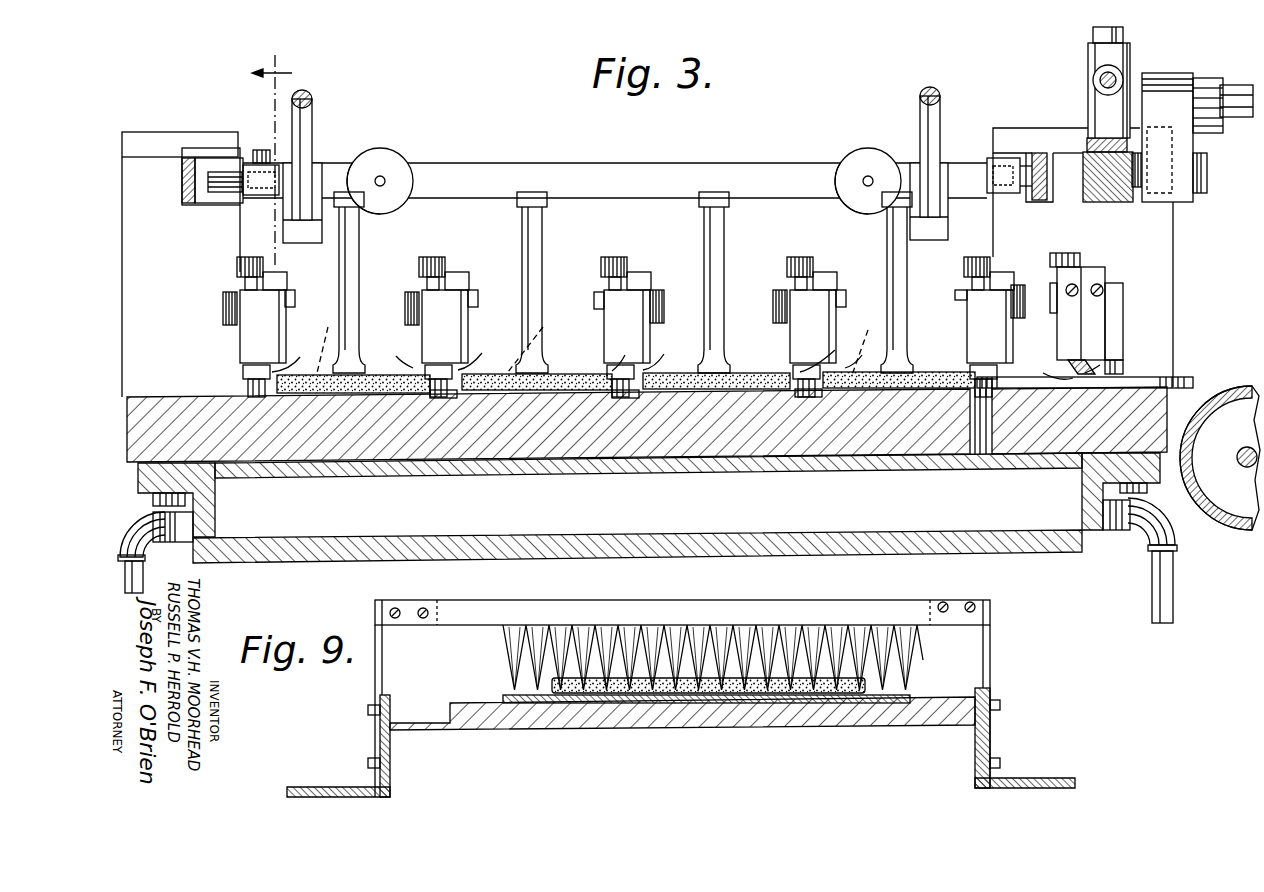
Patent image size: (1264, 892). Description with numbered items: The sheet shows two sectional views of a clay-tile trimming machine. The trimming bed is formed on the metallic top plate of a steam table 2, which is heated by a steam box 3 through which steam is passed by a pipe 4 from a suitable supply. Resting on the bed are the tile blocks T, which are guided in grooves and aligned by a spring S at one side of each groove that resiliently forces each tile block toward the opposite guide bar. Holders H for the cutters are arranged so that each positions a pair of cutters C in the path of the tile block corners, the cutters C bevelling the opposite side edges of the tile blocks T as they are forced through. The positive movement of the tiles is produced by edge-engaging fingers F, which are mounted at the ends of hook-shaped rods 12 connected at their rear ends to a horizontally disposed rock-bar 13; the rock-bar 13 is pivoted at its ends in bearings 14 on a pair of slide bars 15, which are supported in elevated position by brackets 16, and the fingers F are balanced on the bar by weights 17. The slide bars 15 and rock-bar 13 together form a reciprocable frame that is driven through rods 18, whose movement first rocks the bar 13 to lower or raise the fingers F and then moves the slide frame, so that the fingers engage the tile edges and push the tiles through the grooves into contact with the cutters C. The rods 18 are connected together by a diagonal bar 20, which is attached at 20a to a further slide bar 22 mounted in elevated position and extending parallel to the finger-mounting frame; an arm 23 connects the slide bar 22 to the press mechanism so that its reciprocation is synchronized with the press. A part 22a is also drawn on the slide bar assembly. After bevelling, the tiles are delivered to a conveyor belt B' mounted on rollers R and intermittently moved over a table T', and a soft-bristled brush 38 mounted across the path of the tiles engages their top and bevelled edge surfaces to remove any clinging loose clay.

In FIG. 3, the steam table 2 is at (188, 405).
In FIG. 3, the steam box 3 is at (1040, 521).
In FIG. 3, the pipe 4 is at (1160, 575).
In FIG. 3, the hook-shaped rod 12 is at (355, 277).
In FIG. 3, the rock-bar 13 is at (480, 170).
In FIG. 3, the bearing 14 is at (222, 203).
In FIG. 3, the slide bar 15 is at (1040, 200).
In FIG. 3, the bracket 16 is at (140, 298).
In FIG. 3, the weight 17 is at (388, 163).
In FIG. 3, the rod 18 is at (312, 100).
In FIG. 3, the diagonal bar 20 is at (1098, 142).
In FIG. 3, the connection of diagonal bar 20a is at (1100, 132).
In FIG. 3, the slide bar 22 is at (1113, 184).
In FIG. 3, the tube 22a is at (1121, 75).
In FIG. 3, the arm 23 is at (1233, 103).
In FIG. 9, the brush 38 is at (572, 611).
In FIG. 3, the holder H is at (1143, 272).
In FIG. 3, the cutter C is at (686, 357).
In FIG. 3, the edge-engaging finger F is at (594, 338).
In FIG. 3, the tile block T is at (626, 361).
In FIG. 9, the tile block T is at (708, 720).
In FIG. 9, the table T' is at (682, 729).
In FIG. 3, the spring S is at (445, 398).
In FIG. 3, the roller R is at (1233, 396).
In FIG. 3, the belt B' is at (1216, 471).
In FIG. 9, the belt B' is at (684, 687).